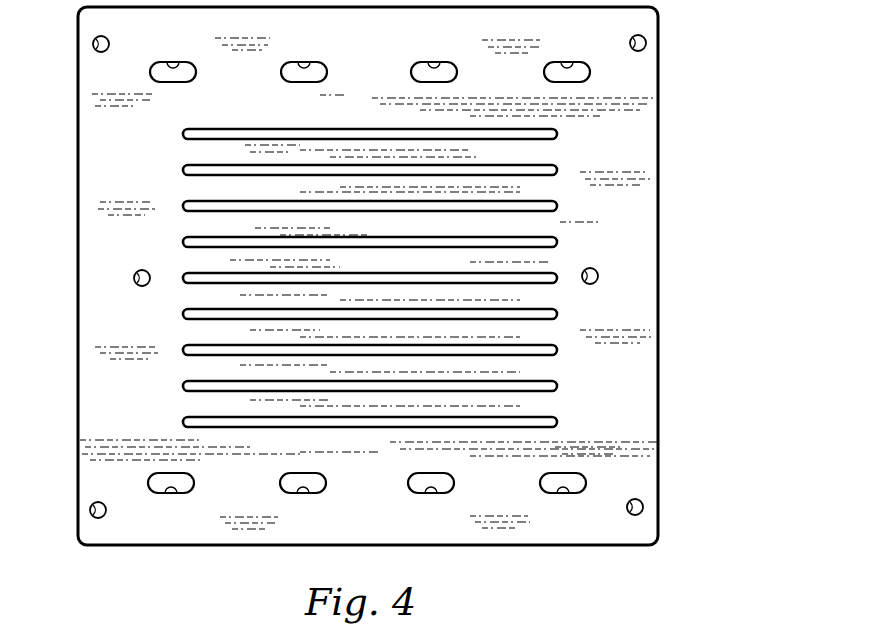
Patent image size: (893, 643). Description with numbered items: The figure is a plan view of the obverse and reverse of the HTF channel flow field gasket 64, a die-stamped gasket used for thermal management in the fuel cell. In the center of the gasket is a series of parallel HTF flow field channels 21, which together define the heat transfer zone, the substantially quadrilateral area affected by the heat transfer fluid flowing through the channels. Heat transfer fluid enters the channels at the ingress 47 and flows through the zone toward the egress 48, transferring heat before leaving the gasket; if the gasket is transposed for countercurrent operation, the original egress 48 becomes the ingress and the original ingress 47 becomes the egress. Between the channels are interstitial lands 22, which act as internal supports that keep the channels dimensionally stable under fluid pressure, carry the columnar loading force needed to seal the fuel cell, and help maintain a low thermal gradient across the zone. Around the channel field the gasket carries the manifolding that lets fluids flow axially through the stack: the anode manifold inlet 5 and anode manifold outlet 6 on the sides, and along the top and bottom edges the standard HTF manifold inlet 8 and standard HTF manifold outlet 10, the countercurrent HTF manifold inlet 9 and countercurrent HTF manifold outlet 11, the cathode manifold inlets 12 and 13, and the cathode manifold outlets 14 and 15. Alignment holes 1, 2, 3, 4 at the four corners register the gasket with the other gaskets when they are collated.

The alignment hole 1 is at (93, 43).
The alignment hole 2 is at (646, 43).
The alignment hole 3 is at (641, 500).
The alignment hole 4 is at (91, 507).
The anode manifold inlet 5 is at (134, 276).
The anode manifold outlet 6 is at (598, 272).
The standard HTF manifold inlet 8 is at (170, 68).
The countercurrent HTF manifold inlet 9 is at (564, 68).
The standard HTF manifold outlet 10 is at (564, 488).
The countercurrent HTF manifold outlet 11 is at (170, 489).
The cathode manifold inlet 12 is at (301, 68).
The cathode manifold inlet 13 is at (431, 68).
The cathode manifold outlet 14 is at (430, 488).
The cathode manifold outlet 15 is at (300, 489).
The HTF flow field channels 21 is at (560, 170).
The interstitial lands 22 is at (190, 189).
The HTF flow field channel ingress 47 is at (181, 385).
The HTF flow field channel egress 48 is at (559, 385).
The HTF channel flow field gasket 64 is at (712, 201).